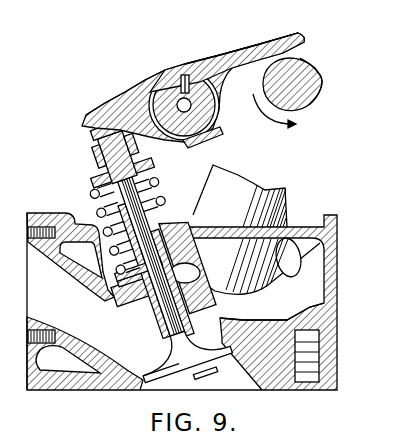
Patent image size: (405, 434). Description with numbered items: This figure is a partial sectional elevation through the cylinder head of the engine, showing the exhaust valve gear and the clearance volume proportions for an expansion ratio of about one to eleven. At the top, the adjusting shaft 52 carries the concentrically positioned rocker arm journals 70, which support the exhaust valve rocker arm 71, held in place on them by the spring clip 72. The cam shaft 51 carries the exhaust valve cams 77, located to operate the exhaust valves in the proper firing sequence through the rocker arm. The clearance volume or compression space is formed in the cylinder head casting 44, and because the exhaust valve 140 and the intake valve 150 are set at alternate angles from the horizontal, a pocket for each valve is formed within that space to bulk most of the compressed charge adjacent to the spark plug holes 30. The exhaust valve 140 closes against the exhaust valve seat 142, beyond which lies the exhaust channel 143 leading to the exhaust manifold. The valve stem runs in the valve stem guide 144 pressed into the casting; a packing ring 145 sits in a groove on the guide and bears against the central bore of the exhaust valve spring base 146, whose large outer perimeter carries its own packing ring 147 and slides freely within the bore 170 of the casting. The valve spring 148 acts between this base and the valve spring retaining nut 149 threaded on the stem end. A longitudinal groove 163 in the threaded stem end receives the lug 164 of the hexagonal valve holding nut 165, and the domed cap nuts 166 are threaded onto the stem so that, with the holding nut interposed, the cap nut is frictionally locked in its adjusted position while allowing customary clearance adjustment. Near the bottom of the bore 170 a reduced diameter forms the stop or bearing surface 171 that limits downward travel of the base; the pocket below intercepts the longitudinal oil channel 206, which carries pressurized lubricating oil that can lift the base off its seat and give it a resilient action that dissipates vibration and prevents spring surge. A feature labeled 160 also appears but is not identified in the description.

The spark plug holes 30 is at (342, 366).
The cylinder head casting 44 is at (292, 227).
The cam shaft 51 is at (307, 66).
The adjusting shaft 52 is at (184, 75).
The rocker arm journals 70 is at (162, 79).
The exhaust valve rocker arm 71 is at (120, 98).
The spring clip 72 is at (217, 138).
The exhaust valve cams 77 is at (320, 79).
The exhaust valve 140 is at (162, 385).
The exhaust valve seat 142 is at (158, 364).
The exhaust channel 143 is at (52, 313).
The valve stem guide 144 is at (160, 338).
The packing ring 145 is at (182, 247).
The exhaust valve spring base 146 is at (80, 282).
The packing ring 147 is at (98, 292).
The valve spring 148 is at (157, 190).
The valve spring retaining nut 149 is at (93, 182).
The intake valve 150 is at (208, 388).
The spray pattern 160 is at (245, 195).
The longitudinal groove 163 is at (93, 146).
The lug 164 is at (92, 160).
The valve holding nut 165 is at (131, 146).
The cap nuts 166 is at (93, 133).
The bore 170 is at (102, 258).
The stop or bearing surface 171 is at (118, 304).
The longitudinal oil channel 206 is at (208, 298).